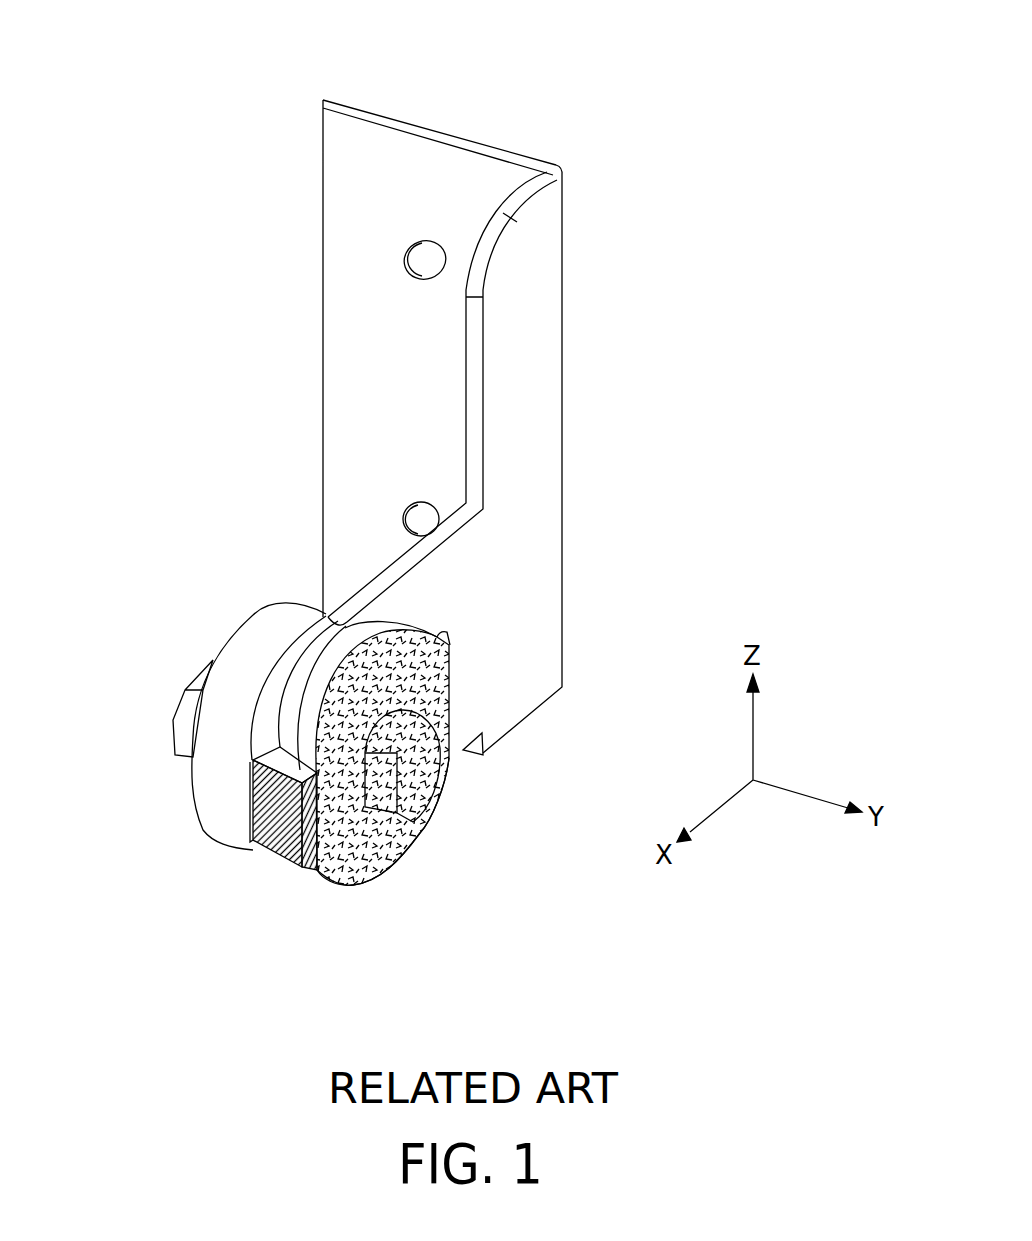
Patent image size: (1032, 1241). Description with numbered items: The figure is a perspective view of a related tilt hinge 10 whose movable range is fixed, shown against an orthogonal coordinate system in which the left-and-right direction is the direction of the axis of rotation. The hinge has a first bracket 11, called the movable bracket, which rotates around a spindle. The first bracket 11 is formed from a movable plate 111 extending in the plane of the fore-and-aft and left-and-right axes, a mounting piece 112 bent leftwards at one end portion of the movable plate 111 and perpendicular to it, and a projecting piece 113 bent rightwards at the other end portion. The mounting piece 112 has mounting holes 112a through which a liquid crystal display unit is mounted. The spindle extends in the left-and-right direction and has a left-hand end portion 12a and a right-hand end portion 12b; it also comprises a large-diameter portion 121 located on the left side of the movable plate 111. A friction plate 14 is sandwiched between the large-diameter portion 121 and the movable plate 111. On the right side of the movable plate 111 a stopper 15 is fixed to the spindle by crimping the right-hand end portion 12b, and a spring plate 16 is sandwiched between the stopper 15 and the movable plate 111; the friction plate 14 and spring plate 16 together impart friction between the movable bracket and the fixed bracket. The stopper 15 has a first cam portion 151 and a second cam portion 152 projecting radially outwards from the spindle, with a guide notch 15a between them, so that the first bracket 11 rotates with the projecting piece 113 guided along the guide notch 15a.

The tilt hinge 10 is at (624, 104).
The first bracket 11 is at (530, 322).
The movable plate 111 is at (533, 457).
The mounting piece 112 is at (343, 187).
The mounting holes 112a is at (408, 272).
The projecting piece 113 is at (258, 857).
The left-hand end portion 12a is at (172, 721).
The right-hand end portion 12b is at (413, 822).
The large-diameter portion 121 is at (198, 793).
The friction plate 14 is at (273, 660).
The stopper 15 is at (368, 883).
The guide notch 15a is at (315, 880).
The first cam portion 151 is at (287, 662).
The second cam portion 152 is at (427, 853).
The spring plate 16 is at (355, 630).